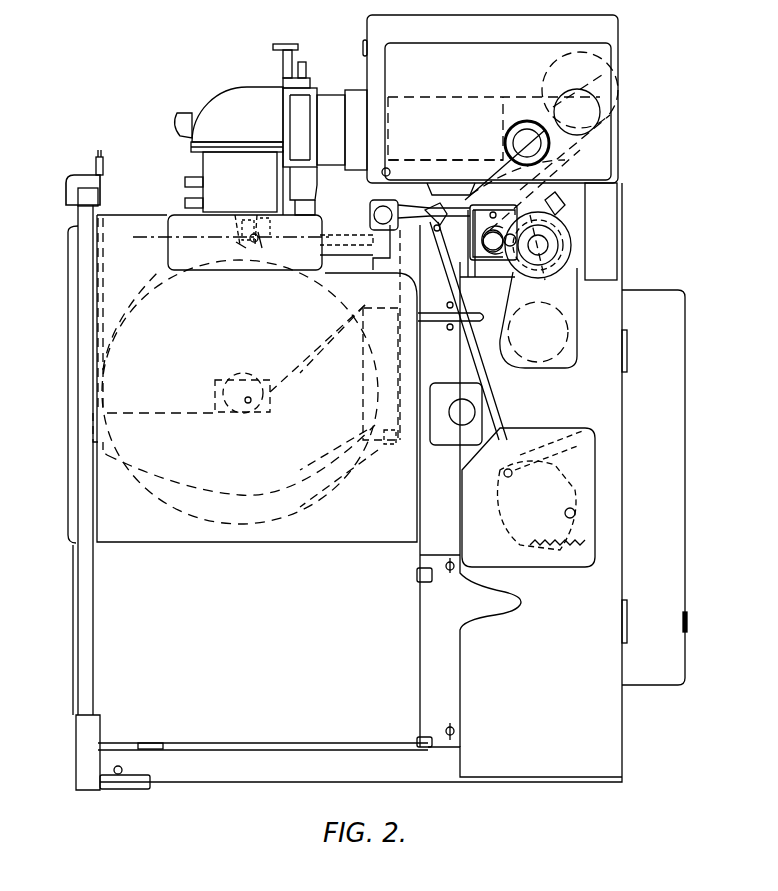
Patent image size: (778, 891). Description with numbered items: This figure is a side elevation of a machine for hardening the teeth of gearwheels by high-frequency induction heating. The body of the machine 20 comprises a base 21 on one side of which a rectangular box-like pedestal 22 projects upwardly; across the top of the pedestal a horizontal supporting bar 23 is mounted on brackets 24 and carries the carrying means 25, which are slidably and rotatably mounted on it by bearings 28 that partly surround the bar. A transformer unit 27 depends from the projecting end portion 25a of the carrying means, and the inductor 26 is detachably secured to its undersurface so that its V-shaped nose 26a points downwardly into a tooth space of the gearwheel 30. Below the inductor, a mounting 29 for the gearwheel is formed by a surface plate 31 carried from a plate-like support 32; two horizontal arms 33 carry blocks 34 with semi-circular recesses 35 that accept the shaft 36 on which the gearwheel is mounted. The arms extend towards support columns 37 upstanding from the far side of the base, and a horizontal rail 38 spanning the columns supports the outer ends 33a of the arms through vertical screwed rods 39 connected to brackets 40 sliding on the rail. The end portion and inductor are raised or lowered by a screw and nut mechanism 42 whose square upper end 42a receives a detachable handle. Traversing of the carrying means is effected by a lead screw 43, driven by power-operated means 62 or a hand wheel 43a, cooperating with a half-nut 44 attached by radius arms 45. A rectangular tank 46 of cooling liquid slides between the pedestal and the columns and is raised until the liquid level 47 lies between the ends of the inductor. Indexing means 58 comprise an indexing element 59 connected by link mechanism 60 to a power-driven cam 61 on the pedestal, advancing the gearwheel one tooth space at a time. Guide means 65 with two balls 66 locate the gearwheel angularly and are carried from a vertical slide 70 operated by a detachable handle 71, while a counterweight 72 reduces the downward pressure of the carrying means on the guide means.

The machine body 20 is at (67, 458).
The base 21 is at (263, 766).
The pedestal 22 is at (393, 482).
The supporting bar 23 is at (540, 143).
The brackets 24 is at (476, 272).
The carrying means 25 is at (351, 86).
The projecting end portion of the carrying means 25a is at (207, 110).
The inductor 26 is at (235, 224).
The nose of the inductor 26a is at (238, 246).
The transformer unit 27 is at (203, 160).
The bearings 28 is at (491, 230).
The mounting 29 is at (372, 450).
The gearwheel 30 is at (167, 490).
The surface plate 31 is at (383, 365).
The plate-like support 32 is at (390, 438).
The arms 33 is at (262, 470).
The outer ends of the arms 33a is at (120, 448).
The blocks 34 is at (215, 395).
The semi-circular recesses 35 is at (248, 405).
The shaft 36 is at (253, 373).
The support columns 37 is at (100, 674).
The horizontal rail 38 is at (100, 197).
The screwed rods 39 is at (108, 370).
The brackets 40 is at (79, 180).
The screw and nut mechanism 42 is at (306, 86).
The upper end of the screw 42a is at (303, 62).
The lead screw 43 is at (548, 248).
The hand wheel 43a is at (548, 270).
The half-nut 44 is at (560, 238).
The radius arms 45 is at (505, 228).
The tank 46 is at (257, 378).
The cooling liquid level 47 is at (150, 240).
The indexing means 58 is at (381, 260).
The indexing element 59 is at (290, 262).
The link mechanism 60 is at (445, 215).
The cam 61 is at (558, 482).
The power-operated means 62 is at (565, 347).
The guide means 65 is at (262, 244).
The balls 66 is at (254, 243).
The vertical slide 70 is at (295, 202).
The detachable handle 71 is at (283, 72).
The counterweight 72 is at (555, 72).